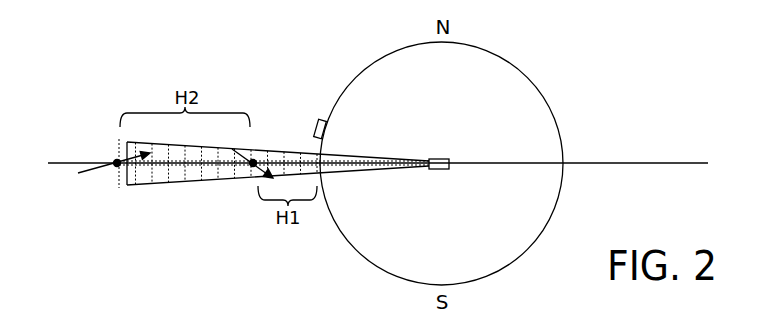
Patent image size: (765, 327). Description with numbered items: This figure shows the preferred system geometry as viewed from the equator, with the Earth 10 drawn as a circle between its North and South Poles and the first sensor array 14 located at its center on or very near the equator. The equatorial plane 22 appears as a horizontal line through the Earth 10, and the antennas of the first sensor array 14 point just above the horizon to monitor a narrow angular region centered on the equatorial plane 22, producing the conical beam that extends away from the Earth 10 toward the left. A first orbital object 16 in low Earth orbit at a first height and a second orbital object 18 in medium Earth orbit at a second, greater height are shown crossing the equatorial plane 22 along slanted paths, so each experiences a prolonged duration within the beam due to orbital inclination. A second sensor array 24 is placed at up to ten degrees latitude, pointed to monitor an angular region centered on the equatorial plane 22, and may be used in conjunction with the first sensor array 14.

The Earth 10 is at (441, 163).
The first sensor array 14 is at (450, 170).
The first orbital object 16 is at (254, 160).
The second orbital object 18 is at (121, 171).
The equatorial plane 22 is at (630, 163).
The second sensor array 24 is at (320, 120).